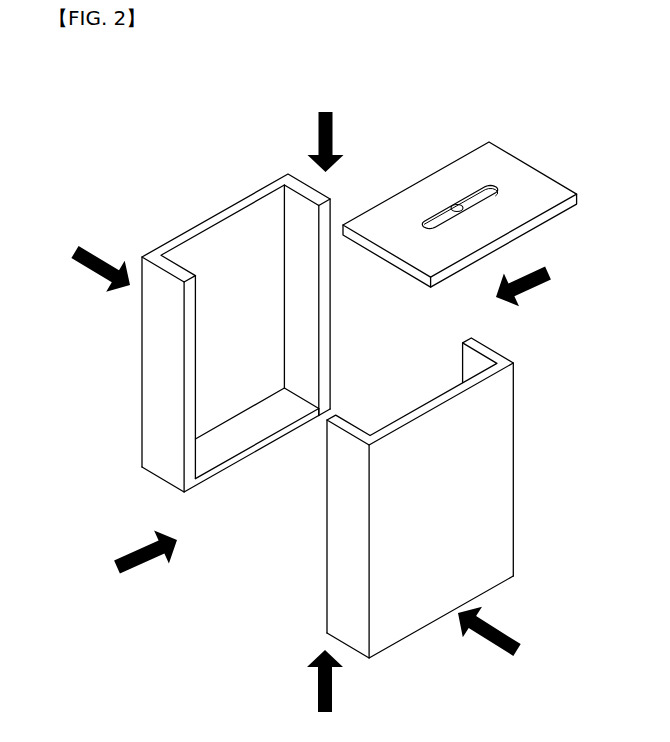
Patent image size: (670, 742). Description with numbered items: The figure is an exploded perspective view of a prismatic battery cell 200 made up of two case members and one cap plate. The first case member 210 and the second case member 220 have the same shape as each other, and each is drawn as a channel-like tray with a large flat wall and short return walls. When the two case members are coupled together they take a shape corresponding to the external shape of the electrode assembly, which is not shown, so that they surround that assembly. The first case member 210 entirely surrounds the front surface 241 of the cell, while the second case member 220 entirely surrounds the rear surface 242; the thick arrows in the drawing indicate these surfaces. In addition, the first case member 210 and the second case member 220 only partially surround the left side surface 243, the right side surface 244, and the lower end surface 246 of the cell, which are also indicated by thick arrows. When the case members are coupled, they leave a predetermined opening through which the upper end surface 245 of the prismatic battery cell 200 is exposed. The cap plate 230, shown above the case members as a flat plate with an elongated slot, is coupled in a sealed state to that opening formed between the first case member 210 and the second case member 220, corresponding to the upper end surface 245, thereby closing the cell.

The prismatic battery cell 200 is at (110, 123).
The first case member 210 is at (546, 346).
The second case member 220 is at (211, 333).
The cap plate 230 is at (517, 181).
The front surface 241 is at (507, 637).
The rear surface 242 is at (83, 264).
The left side surface 243 is at (128, 561).
The right side surface 244 is at (543, 284).
The upper end surface 245 is at (326, 130).
The lower end surface 246 is at (324, 695).